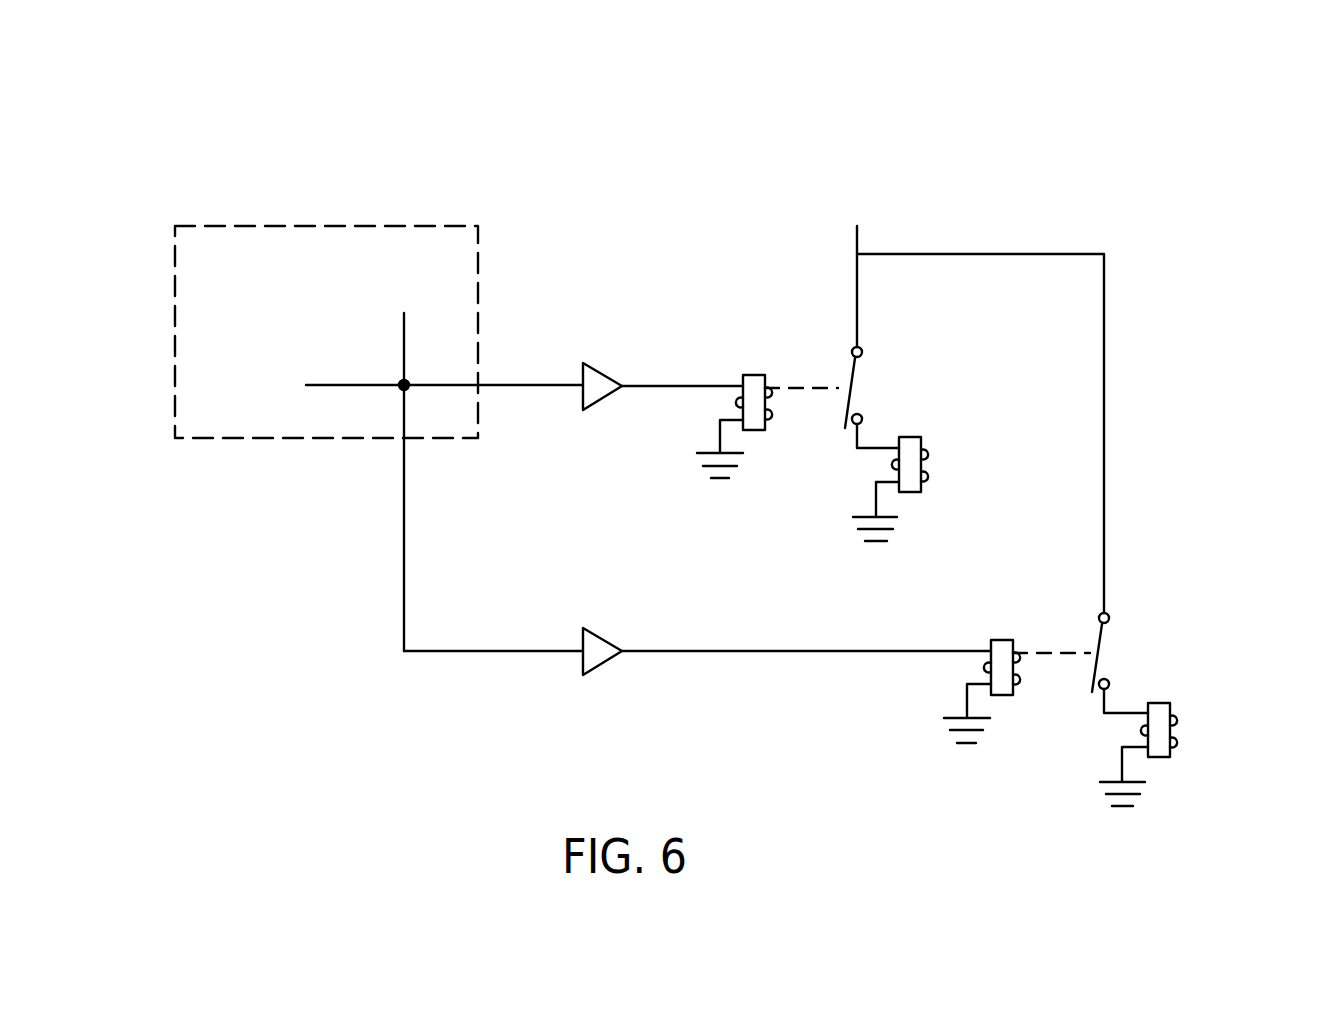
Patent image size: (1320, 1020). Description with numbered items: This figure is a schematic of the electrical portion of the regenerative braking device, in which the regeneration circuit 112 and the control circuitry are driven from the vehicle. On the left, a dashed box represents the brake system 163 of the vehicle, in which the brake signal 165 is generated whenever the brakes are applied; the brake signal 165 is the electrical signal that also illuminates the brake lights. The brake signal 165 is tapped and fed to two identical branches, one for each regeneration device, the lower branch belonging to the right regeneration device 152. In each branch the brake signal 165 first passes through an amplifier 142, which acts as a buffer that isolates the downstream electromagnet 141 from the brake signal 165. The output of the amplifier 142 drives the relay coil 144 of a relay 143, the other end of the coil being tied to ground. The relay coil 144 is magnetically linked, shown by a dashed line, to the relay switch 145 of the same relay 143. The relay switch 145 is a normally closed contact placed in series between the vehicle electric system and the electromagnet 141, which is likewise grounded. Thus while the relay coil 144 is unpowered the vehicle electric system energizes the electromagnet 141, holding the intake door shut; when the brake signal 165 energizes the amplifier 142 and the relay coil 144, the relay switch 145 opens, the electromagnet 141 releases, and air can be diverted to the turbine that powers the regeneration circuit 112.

The regeneration circuit 112 is at (272, 98).
The brake system 163 is at (355, 226).
The brake signal 165 is at (350, 382).
The amplifier 142 is at (599, 367).
The relay 143 is at (797, 325).
The relay coil 144 is at (757, 438).
The relay switch 145 is at (863, 382).
The electromagnet 141 is at (927, 428).
The right regeneration device 152 is at (1003, 610).